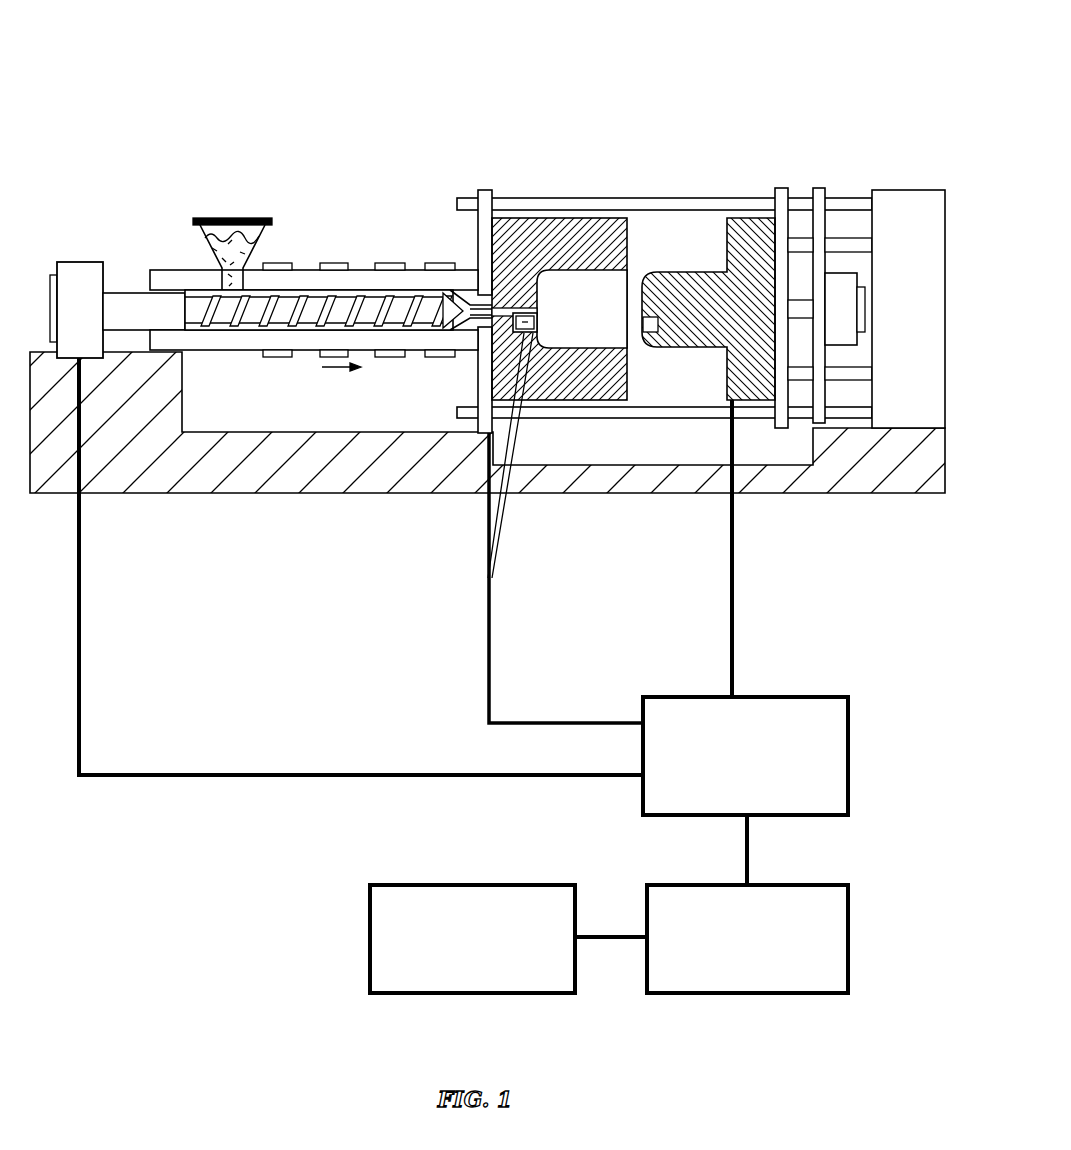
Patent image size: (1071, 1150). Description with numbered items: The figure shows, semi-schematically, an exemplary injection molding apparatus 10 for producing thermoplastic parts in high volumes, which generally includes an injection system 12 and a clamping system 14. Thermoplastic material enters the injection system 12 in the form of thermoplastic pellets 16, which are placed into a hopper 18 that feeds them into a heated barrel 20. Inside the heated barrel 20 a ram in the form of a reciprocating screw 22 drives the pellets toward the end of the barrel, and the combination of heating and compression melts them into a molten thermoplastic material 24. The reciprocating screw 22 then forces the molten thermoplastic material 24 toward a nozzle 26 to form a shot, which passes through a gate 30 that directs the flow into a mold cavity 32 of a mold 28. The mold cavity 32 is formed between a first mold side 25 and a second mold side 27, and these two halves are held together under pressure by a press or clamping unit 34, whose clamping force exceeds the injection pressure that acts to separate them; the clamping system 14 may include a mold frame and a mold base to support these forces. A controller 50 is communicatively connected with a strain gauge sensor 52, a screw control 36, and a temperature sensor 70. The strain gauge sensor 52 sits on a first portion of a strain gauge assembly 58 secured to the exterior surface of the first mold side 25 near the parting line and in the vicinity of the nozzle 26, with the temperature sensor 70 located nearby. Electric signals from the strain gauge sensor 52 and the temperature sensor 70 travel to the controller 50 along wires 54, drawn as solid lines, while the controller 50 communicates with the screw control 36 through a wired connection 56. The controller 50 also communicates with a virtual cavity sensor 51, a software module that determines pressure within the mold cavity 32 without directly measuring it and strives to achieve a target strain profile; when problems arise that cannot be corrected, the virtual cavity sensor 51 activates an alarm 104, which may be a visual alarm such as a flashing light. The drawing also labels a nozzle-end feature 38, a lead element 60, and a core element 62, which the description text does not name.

The injection molding apparatus 10 is at (448, 60).
The injection system 12 is at (288, 388).
The clamping system 14 is at (690, 345).
The thermoplastic pellets 16 is at (201, 216).
The hopper 18 is at (245, 215).
The heated barrel 20 is at (321, 303).
The reciprocating screw 22 is at (238, 312).
The molten thermoplastic material 24 is at (415, 294).
The first mold side 25 is at (633, 298).
The nozzle 26 is at (559, 272).
The second mold side 27 is at (708, 298).
The mold 28 is at (628, 211).
The gate 30 is at (535, 307).
The mold cavity 32 is at (585, 285).
The press or clamping unit 34 is at (877, 179).
The screw control 36 is at (70, 262).
The nozzle 38 is at (448, 298).
The controller 50 is at (825, 697).
The virtual cavity sensor 51 is at (825, 885).
The strain gauge sensor 52 is at (487, 352).
The wires 54 is at (728, 652).
The wired connection 56 is at (330, 775).
The strain gauge assembly 58 is at (512, 352).
The strain gauge 60 is at (497, 397).
The core 62 is at (665, 292).
The temperature sensor 70 is at (530, 335).
The alarm 104 is at (472, 939).